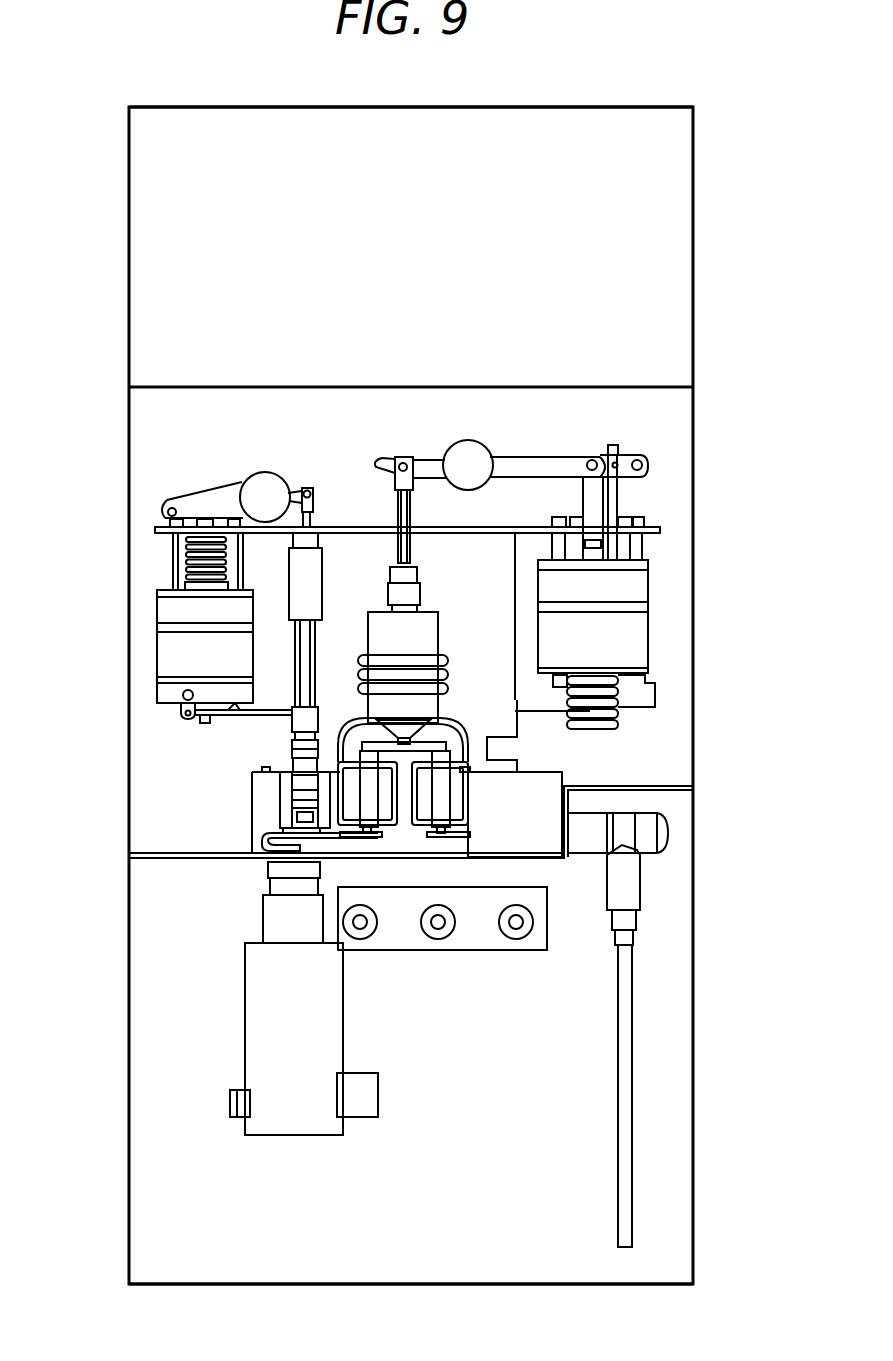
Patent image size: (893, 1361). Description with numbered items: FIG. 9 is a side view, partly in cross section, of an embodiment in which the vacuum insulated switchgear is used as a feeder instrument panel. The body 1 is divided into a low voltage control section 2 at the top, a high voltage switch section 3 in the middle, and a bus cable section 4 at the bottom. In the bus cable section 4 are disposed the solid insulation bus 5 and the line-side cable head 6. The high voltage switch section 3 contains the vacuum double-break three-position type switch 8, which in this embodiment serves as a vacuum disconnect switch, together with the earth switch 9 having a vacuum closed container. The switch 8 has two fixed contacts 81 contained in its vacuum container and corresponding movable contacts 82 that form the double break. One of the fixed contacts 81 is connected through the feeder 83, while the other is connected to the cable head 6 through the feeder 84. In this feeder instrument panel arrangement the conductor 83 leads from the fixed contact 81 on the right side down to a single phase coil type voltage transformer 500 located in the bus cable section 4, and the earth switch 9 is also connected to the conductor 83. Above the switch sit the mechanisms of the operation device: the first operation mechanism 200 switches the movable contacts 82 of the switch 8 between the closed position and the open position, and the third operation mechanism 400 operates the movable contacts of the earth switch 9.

The body 1 is at (718, 165).
The low voltage control section 2 is at (666, 285).
The high voltage switch section 3 is at (666, 410).
The bus cable section 4 is at (660, 1222).
The solid insulation bus 5 is at (527, 912).
The cable head 6 is at (660, 827).
The vacuum double-break three-position type switch 8 is at (403, 832).
The earth switch 9 is at (282, 793).
The fixed contact 81 is at (440, 808).
The movable contact 82 is at (505, 766).
The feeder 83 is at (262, 842).
The feeder 84 is at (447, 797).
The first operation mechanism 200 is at (648, 633).
The third operation mechanism 400 is at (157, 641).
The single phase coil type voltage transformer 500 is at (247, 995).